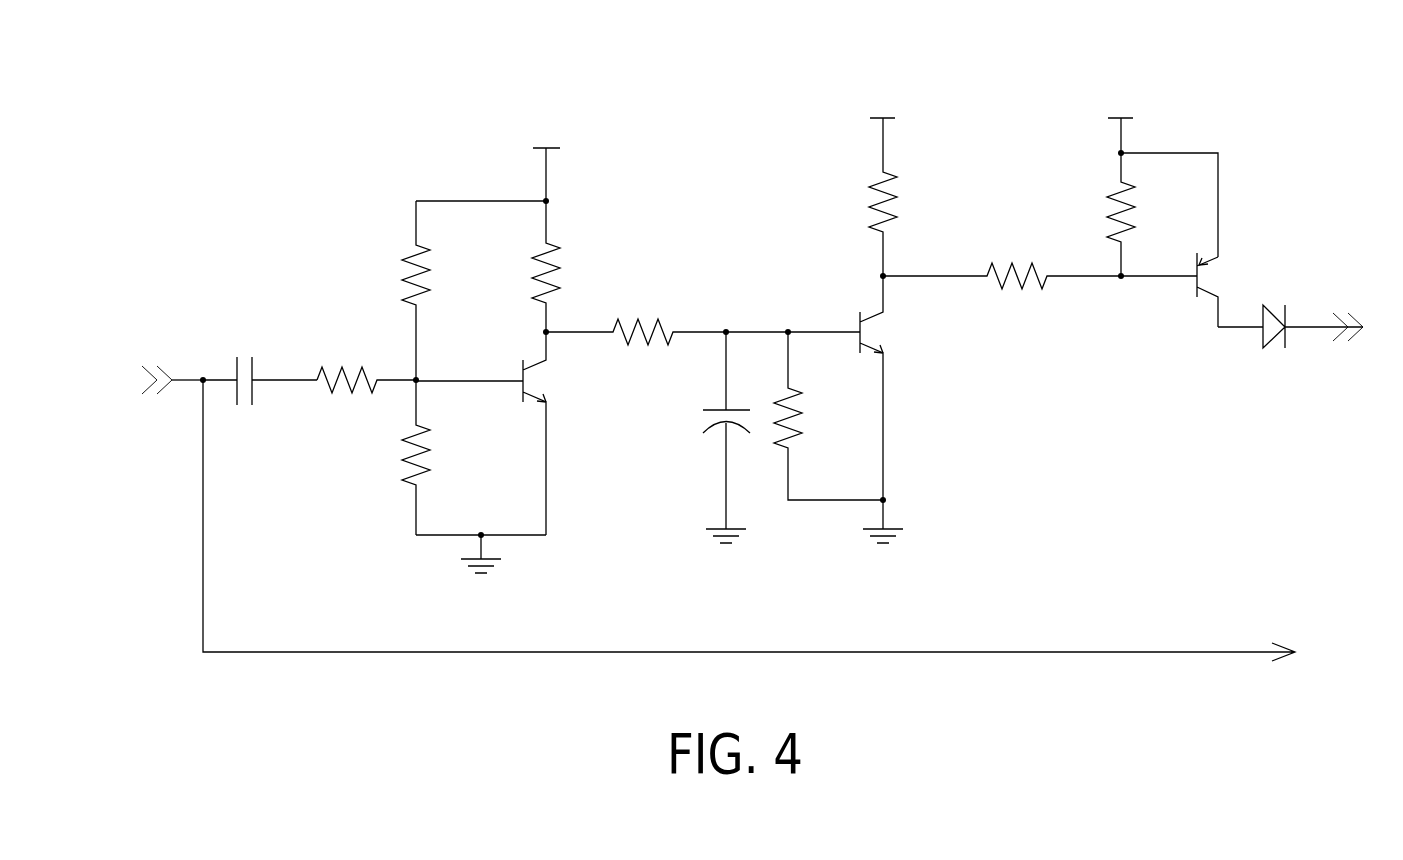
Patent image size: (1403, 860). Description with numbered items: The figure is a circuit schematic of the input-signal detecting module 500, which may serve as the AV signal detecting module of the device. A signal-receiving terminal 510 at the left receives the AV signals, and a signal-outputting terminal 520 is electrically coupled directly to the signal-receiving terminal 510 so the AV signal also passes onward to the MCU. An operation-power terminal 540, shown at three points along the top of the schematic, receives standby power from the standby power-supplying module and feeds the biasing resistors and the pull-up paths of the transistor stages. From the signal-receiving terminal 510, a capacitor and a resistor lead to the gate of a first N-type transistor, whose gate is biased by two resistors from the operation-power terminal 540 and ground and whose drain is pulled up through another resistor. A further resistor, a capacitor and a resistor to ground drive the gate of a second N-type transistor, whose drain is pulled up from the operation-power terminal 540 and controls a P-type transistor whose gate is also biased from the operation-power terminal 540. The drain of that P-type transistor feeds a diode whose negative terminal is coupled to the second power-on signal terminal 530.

The input-signal detecting module 500 is at (784, 42).
The signal-receiving terminal 510 is at (157, 368).
The signal-outputting terminal 520 is at (1202, 650).
The second power-on signal terminal 530 is at (1354, 319).
The operation-power terminal 540 is at (551, 146).